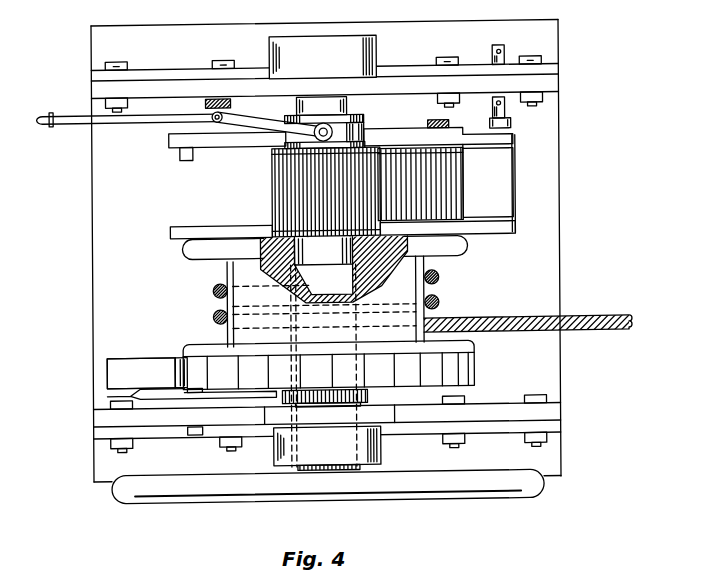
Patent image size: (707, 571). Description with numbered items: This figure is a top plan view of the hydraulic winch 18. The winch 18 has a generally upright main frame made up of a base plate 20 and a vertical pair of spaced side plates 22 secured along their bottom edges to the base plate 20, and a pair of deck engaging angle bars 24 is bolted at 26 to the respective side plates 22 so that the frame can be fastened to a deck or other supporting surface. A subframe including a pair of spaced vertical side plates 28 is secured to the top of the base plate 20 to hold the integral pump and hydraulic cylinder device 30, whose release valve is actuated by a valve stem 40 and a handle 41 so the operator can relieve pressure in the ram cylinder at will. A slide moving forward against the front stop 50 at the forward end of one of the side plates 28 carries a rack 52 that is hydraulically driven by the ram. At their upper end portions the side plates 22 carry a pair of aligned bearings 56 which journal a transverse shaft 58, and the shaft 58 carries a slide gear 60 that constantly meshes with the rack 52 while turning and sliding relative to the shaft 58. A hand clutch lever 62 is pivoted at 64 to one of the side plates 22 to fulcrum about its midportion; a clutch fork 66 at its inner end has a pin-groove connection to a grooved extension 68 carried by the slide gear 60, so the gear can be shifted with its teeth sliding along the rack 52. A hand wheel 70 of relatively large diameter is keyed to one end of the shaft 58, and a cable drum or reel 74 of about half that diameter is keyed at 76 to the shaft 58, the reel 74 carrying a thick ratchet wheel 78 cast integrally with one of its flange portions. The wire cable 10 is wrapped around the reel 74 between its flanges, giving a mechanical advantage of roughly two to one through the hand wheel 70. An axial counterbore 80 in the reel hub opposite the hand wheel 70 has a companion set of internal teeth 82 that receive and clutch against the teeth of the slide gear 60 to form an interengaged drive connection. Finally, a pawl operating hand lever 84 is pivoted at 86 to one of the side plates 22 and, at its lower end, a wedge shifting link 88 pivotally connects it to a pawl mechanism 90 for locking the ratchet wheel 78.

The wire cable 10 is at (604, 338).
The winch 18 is at (559, 30).
The base plate 20 is at (560, 269).
The side plates 22 is at (183, 78).
The deck engaging angle bars 24 is at (90, 38).
The bolts 26 is at (555, 63).
The side plates 28 is at (499, 143).
The pump and hydraulic cylinder device 30 is at (550, 212).
The valve stem 40 is at (489, 128).
The handle 41 is at (505, 51).
The front stop 50 is at (178, 155).
The rack 52 is at (457, 188).
The bearings 56 is at (276, 53).
The transverse shaft 58 is at (331, 104).
The slide gear 60 is at (273, 186).
The hand clutch lever 62 is at (62, 113).
The pivot 64 is at (218, 125).
The clutch fork 66 is at (316, 128).
The grooved extension 68 is at (356, 137).
The hand wheel 70 is at (544, 494).
The cable drum or reel 74 is at (219, 305).
The key 76 is at (287, 368).
The ratchet wheel 78 is at (185, 358).
The axial counterbore 80 is at (226, 277).
The internal teeth 82 is at (437, 290).
The pawl operating hand lever 84 is at (133, 398).
The pivot 86 is at (190, 432).
The wedge shifting link 88 is at (163, 389).
The pawl mechanism 90 is at (128, 354).